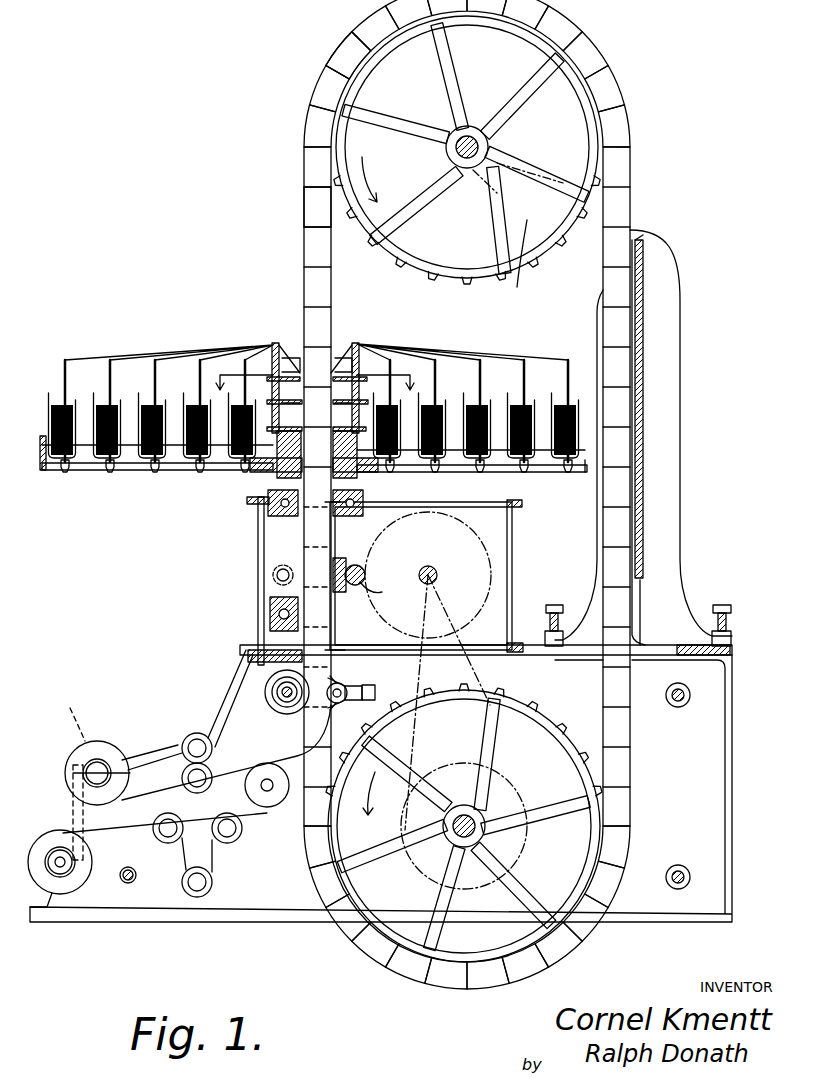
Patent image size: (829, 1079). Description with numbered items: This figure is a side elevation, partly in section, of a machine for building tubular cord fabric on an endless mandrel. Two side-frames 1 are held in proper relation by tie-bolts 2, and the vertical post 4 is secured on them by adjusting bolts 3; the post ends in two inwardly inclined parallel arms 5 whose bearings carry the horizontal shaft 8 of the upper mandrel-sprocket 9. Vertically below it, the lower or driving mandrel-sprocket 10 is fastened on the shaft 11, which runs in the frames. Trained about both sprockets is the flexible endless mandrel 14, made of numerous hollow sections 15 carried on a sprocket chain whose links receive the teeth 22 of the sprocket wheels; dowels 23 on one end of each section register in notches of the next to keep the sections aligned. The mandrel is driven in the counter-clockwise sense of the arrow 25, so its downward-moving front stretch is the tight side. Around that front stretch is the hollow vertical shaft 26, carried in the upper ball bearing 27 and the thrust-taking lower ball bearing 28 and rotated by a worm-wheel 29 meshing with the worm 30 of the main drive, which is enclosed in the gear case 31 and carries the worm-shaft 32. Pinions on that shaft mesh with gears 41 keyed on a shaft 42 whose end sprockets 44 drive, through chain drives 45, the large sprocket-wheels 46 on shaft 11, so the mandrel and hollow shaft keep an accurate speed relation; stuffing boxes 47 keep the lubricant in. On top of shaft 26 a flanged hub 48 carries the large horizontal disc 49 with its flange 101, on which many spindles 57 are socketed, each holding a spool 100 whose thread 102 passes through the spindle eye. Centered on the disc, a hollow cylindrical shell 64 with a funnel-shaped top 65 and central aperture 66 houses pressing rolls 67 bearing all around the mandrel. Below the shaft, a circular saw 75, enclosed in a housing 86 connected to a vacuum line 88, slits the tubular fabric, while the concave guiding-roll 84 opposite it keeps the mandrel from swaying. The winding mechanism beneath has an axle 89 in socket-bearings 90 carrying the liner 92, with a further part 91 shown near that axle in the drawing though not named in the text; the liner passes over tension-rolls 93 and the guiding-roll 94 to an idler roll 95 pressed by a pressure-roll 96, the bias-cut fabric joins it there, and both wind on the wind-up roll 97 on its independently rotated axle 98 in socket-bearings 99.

The side-frames 1 is at (735, 790).
The tie-bolts 2 is at (690, 693).
The adjusting bolts 3 is at (555, 608).
The vertical post 4 is at (690, 575).
The inwardly inclined parallel arms 5 is at (369, 316).
The horizontal shaft 8 is at (472, 135).
The upper mandrel-sprocket 9 is at (358, 92).
The lower or driving mandrel-sprocket 10 is at (598, 810).
The shaft 11 is at (488, 828).
The flexible endless mandrel 14 is at (644, 210).
The hollow sections 15 is at (625, 128).
The teeth or sprockets 22 is at (445, 290).
The dowels 23 is at (330, 100).
The arrow 25 is at (378, 799).
The hollow vertical shaft 26 is at (268, 522).
The upper ball bearing 27 is at (258, 515).
The lower ball bearing 28 is at (270, 618).
The worm-wheel 29 is at (273, 575).
The worm 30 is at (366, 572).
The gear case 31 is at (500, 528).
The worm-shaft 32 is at (380, 594).
The gears 41 is at (490, 562).
The shaft 42 is at (437, 575).
The small sprocket-wheels 44 is at (440, 585).
The chain drives 45 is at (482, 712).
The large sprocket-wheels 46 is at (500, 790).
The stuffing boxes 47 is at (268, 491).
The flanged hub 48 is at (365, 493).
The horizontal disc 49 is at (140, 470).
The spindles 57 is at (112, 372).
The hollow cylindrical shell 64 is at (275, 343).
The funnel shaped top 65 is at (352, 378).
The central aperture 66 is at (340, 345).
The pressing rolls 67 is at (356, 343).
The circular saw 75 is at (350, 688).
The concave guiding-roll 84 is at (278, 705).
The housing 86 is at (344, 703).
The vacuum line 88 is at (378, 693).
The axle 89 is at (50, 850).
The socket-bearings 90 is at (62, 830).
The roller shaft 91 is at (58, 878).
The liner 92 is at (153, 831).
The tension-rolls 93 is at (195, 832).
The guiding-roll 94 is at (266, 808).
The idler roll 95 is at (206, 786).
The pressure-roll 96 is at (200, 733).
The wind-up roll 97 is at (103, 741).
The independently rotated axle 98 is at (72, 765).
The socket-bearings 99 is at (65, 715).
The spool 100 is at (66, 400).
The flange 101 is at (44, 466).
The thread 102 is at (198, 340).